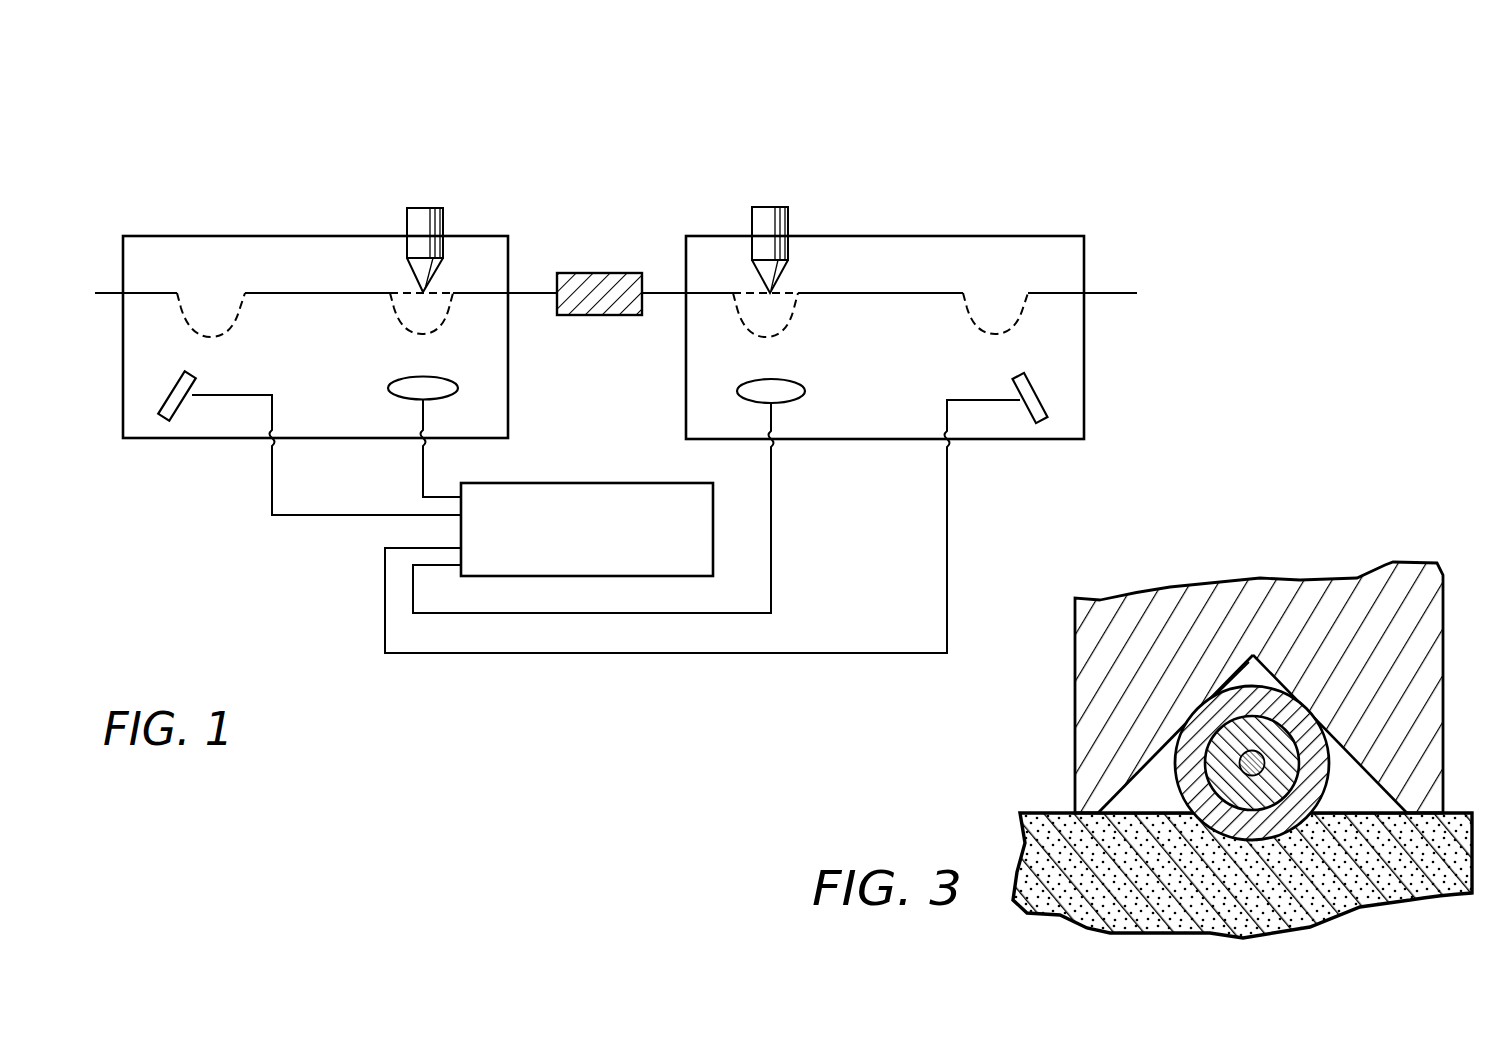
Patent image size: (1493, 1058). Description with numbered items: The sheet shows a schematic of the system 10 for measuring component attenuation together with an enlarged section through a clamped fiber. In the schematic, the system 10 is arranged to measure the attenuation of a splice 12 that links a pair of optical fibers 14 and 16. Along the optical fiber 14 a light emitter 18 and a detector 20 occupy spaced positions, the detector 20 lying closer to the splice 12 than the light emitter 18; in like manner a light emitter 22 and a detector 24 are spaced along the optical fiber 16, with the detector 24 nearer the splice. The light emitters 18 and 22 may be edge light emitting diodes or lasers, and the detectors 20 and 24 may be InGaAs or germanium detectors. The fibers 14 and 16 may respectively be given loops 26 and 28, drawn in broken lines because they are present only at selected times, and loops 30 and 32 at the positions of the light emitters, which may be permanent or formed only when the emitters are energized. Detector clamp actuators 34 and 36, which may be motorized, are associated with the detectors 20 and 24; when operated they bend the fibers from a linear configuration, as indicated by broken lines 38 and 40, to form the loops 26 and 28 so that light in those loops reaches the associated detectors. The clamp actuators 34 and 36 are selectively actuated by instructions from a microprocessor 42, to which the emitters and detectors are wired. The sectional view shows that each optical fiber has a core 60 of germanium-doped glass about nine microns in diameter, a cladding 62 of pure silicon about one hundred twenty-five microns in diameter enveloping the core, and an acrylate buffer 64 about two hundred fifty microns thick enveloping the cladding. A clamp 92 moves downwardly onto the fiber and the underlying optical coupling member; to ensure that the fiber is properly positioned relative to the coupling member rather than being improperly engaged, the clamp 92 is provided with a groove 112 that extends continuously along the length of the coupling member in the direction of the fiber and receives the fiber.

In FIG. 1, the system 10 is at (852, 142).
In FIG. 1, the splice 12 is at (600, 273).
In FIG. 1, the optical fiber 14 is at (283, 293).
In FIG. 3, the optical fiber 14 is at (1187, 727).
In FIG. 1, the optical fiber 16 is at (902, 292).
In FIG. 1, the light emitter 18 is at (163, 403).
In FIG. 1, the detector 20 is at (390, 383).
In FIG. 1, the light emitter 22 is at (1043, 400).
In FIG. 1, the detector 24 is at (780, 378).
In FIG. 1, the loop 26 is at (443, 317).
In FIG. 1, the loop 28 is at (1020, 322).
In FIG. 1, the loop 30 is at (238, 308).
In FIG. 1, the loop 32 is at (738, 313).
In FIG. 1, the detector clamp actuator 34 is at (422, 220).
In FIG. 1, the detector clamp actuator 36 is at (768, 213).
In FIG. 1, the broken line 38 is at (442, 292).
In FIG. 1, the broken line 40 is at (787, 292).
In FIG. 1, the microprocessor 42 is at (573, 483).
In FIG. 3, the core 60 is at (1240, 713).
In FIG. 3, the cladding 62 is at (1232, 783).
In FIG. 3, the buffer 64 is at (1177, 767).
In FIG. 3, the clamp 92 is at (1303, 603).
In FIG. 3, the groove 112 is at (1375, 768).